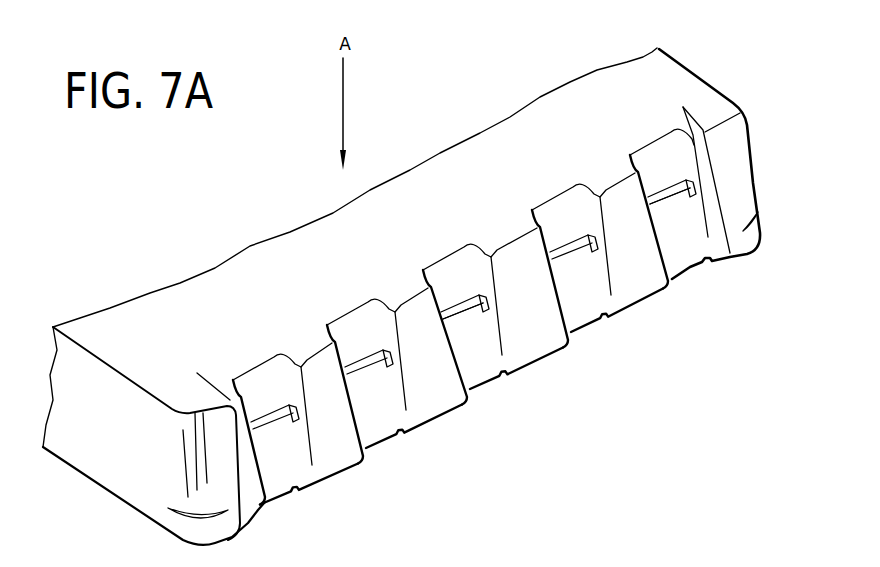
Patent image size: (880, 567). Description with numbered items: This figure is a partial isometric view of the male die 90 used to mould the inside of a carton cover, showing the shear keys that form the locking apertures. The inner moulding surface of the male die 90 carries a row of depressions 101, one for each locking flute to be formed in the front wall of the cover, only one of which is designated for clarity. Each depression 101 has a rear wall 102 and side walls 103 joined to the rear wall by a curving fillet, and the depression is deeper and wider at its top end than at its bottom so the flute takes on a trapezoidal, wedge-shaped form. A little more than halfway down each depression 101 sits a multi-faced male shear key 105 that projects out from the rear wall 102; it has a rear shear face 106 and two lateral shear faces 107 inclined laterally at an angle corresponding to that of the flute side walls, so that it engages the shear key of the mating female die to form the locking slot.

The male die 90 is at (144, 316).
The depression 101 is at (428, 266).
The rear wall 102 is at (453, 270).
The side walls 103 is at (481, 258).
The male shear key 105 is at (462, 318).
The rear shear face 106 is at (460, 318).
The lateral shear faces 107 is at (490, 303).